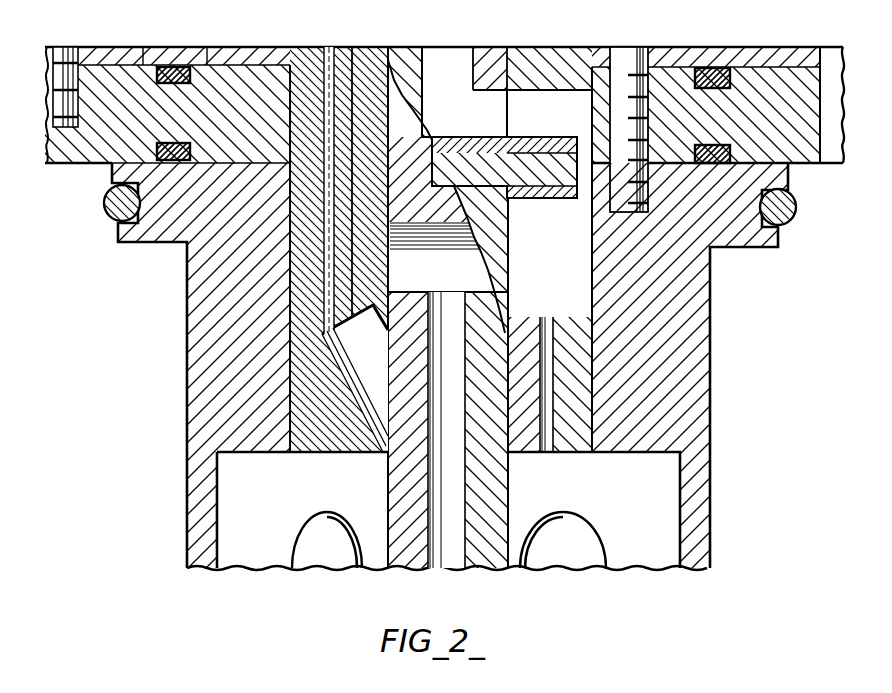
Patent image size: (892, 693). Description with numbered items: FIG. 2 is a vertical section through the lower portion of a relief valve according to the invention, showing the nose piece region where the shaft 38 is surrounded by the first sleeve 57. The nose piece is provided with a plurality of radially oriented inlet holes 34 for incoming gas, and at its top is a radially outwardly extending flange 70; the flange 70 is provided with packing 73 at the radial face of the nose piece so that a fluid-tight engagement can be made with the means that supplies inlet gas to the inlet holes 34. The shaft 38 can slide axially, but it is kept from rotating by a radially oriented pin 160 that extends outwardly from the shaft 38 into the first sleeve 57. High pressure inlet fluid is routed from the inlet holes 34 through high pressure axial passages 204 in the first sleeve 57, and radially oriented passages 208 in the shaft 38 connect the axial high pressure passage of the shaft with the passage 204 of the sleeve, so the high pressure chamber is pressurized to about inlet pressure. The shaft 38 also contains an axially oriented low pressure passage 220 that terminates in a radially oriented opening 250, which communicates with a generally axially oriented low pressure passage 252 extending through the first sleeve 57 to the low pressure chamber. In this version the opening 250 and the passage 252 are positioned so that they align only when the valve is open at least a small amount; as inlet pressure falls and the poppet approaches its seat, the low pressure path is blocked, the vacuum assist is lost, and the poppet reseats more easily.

The inlet holes 34 is at (316, 525).
The shaft 38 is at (400, 472).
The first sleeve 57 is at (307, 291).
The flange 70 is at (178, 241).
The packing 73 is at (103, 204).
The pin 160 is at (525, 150).
The high pressure axial passages 204 is at (553, 454).
The radially oriented passages 208 is at (487, 126).
The low pressure passage 220 is at (458, 328).
The radially oriented opening 250 is at (470, 253).
The low pressure passage 252 is at (333, 108).